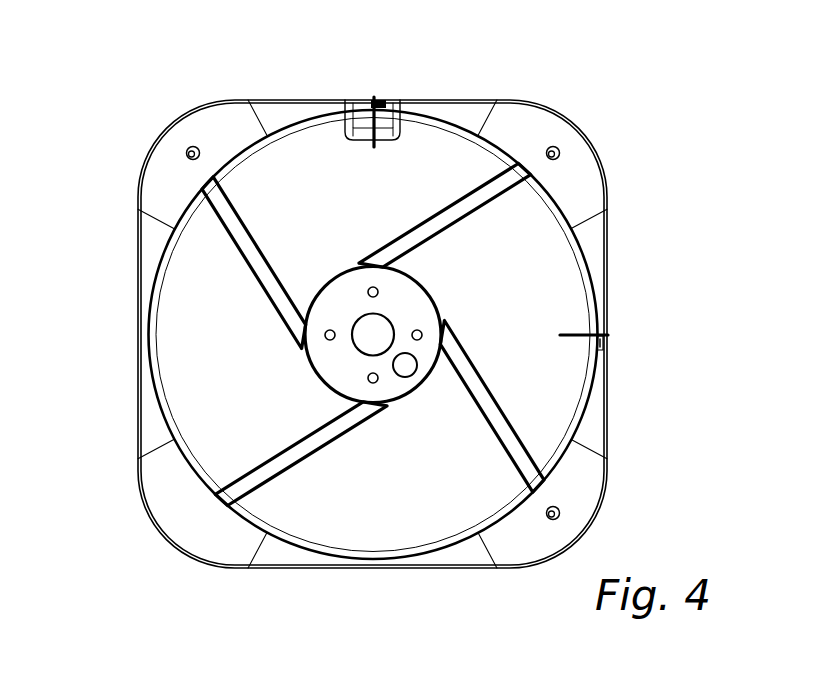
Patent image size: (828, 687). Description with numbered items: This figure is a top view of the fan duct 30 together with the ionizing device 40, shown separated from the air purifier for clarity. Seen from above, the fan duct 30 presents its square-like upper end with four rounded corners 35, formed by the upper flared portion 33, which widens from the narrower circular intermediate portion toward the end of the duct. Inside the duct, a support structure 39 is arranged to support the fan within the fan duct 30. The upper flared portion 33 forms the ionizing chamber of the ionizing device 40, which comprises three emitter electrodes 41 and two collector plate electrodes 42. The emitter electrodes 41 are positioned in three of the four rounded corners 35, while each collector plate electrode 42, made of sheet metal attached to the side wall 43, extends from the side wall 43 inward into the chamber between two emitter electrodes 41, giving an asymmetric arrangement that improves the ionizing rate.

The fan duct 30 is at (470, 101).
The upper flared portion 33 is at (186, 513).
The rounded corners 35 is at (178, 118).
The support structure 39 is at (347, 360).
The ionizing device 40 is at (322, 52).
The emitter electrodes 41 is at (198, 149).
The collector plate electrodes 42 is at (372, 128).
The side wall 43 is at (530, 124).